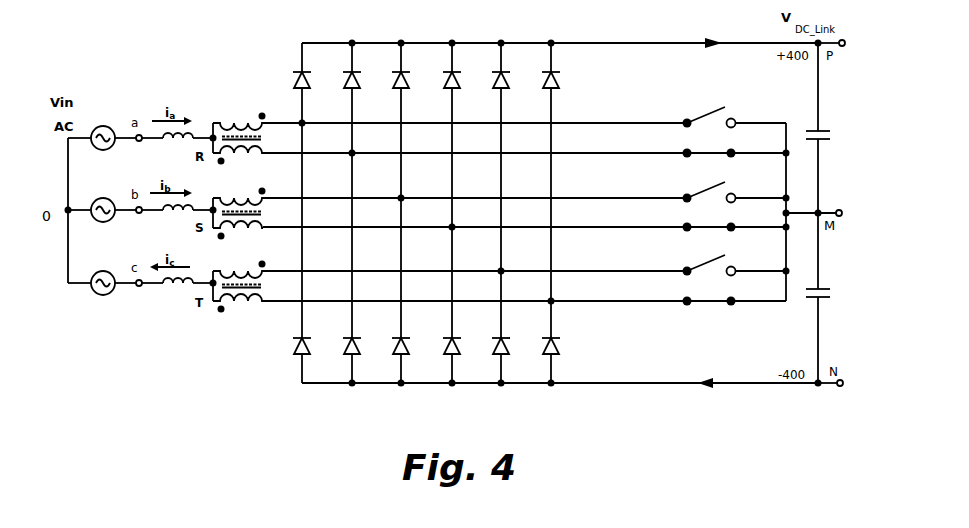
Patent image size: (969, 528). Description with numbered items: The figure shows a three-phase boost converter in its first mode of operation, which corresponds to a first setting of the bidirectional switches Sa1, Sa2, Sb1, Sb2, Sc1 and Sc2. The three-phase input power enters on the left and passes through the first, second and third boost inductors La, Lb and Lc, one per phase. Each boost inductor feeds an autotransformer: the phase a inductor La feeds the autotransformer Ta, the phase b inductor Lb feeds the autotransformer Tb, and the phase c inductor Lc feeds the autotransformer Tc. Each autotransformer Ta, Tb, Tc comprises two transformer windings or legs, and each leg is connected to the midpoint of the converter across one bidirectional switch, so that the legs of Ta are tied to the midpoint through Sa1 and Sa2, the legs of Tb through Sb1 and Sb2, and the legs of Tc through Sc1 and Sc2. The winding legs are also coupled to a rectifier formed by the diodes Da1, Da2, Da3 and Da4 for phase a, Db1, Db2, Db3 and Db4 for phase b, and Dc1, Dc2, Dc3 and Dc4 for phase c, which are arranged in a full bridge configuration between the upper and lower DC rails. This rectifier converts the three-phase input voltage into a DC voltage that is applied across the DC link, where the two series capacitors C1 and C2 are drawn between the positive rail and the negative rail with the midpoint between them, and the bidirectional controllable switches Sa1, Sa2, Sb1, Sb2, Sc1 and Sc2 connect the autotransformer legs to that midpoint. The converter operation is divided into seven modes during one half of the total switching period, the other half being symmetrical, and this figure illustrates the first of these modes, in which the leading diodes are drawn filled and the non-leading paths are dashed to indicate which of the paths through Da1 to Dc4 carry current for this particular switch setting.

The first boost inductor La is at (175, 148).
The second boost inductor Lb is at (175, 220).
The third boost inductor Lc is at (175, 293).
The autotransformer Ta is at (239, 136).
The autotransformer Tb is at (239, 211).
The autotransformer Tc is at (239, 284).
The diode Da1 is at (310, 78).
The diode Da2 is at (309, 357).
The diode Da3 is at (360, 78).
The diode Da4 is at (359, 357).
The diode Db1 is at (409, 78).
The diode Db2 is at (408, 357).
The diode Db3 is at (460, 78).
The diode Db4 is at (459, 357).
The diode Dc1 is at (509, 78).
The diode Dc2 is at (508, 357).
The diode Dc3 is at (559, 78).
The diode Dc4 is at (558, 357).
The bidirectional switch Sa1 is at (709, 122).
The bidirectional switch Sa2 is at (709, 158).
The bidirectional switch Sb1 is at (709, 197).
The bidirectional switch Sb2 is at (709, 232).
The bidirectional switch Sc1 is at (709, 270).
The bidirectional switch Sc2 is at (709, 306).
The DC link capacitor C1 is at (828, 136).
The DC link capacitor C2 is at (828, 295).